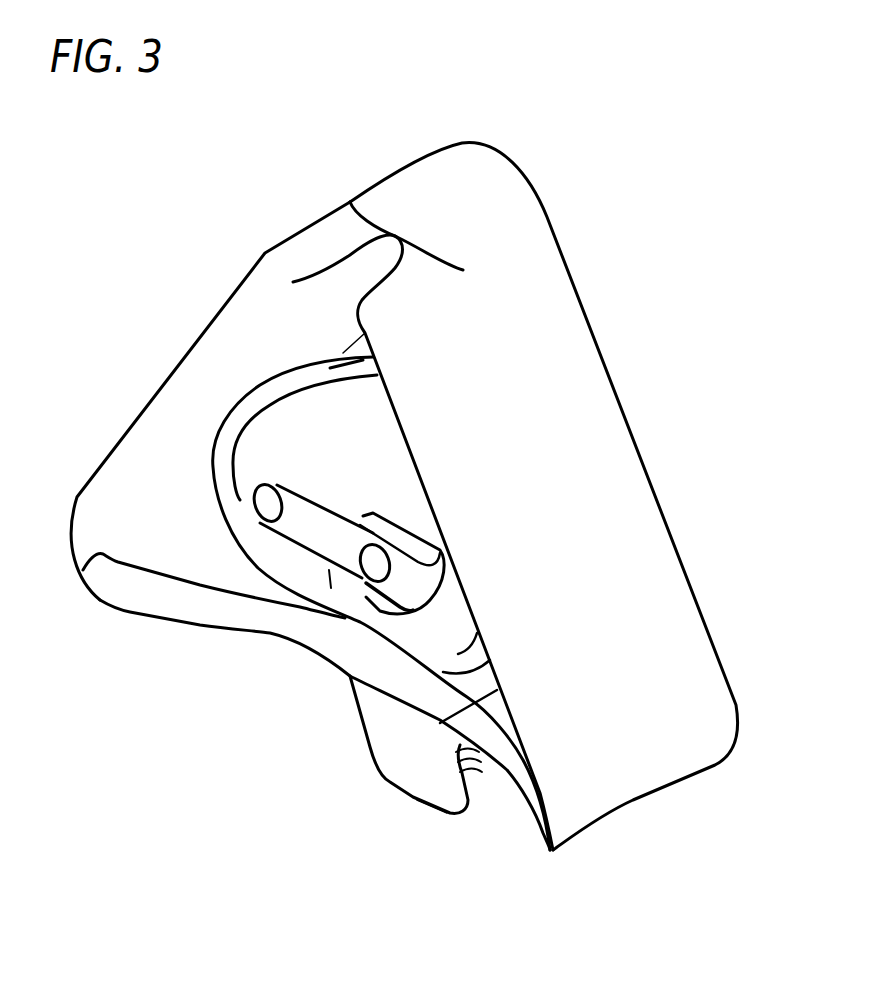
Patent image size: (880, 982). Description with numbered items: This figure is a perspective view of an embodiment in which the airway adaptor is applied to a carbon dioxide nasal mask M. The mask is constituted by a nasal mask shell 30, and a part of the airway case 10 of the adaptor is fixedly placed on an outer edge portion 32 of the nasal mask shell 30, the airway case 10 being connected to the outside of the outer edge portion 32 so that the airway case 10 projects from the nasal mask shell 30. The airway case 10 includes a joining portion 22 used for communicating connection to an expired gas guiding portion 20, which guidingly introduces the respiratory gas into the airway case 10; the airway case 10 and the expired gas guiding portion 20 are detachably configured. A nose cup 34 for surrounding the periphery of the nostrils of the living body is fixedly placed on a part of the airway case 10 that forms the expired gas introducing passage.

The carbon dioxide nasal mask M is at (595, 268).
The nasal mask shell 30 is at (157, 428).
The nose cup 34 is at (303, 417).
The outer edge portion 32 is at (332, 648).
The expired gas guiding portion 20 is at (272, 550).
The joining portion 22 is at (363, 588).
The airway case 10 is at (395, 753).